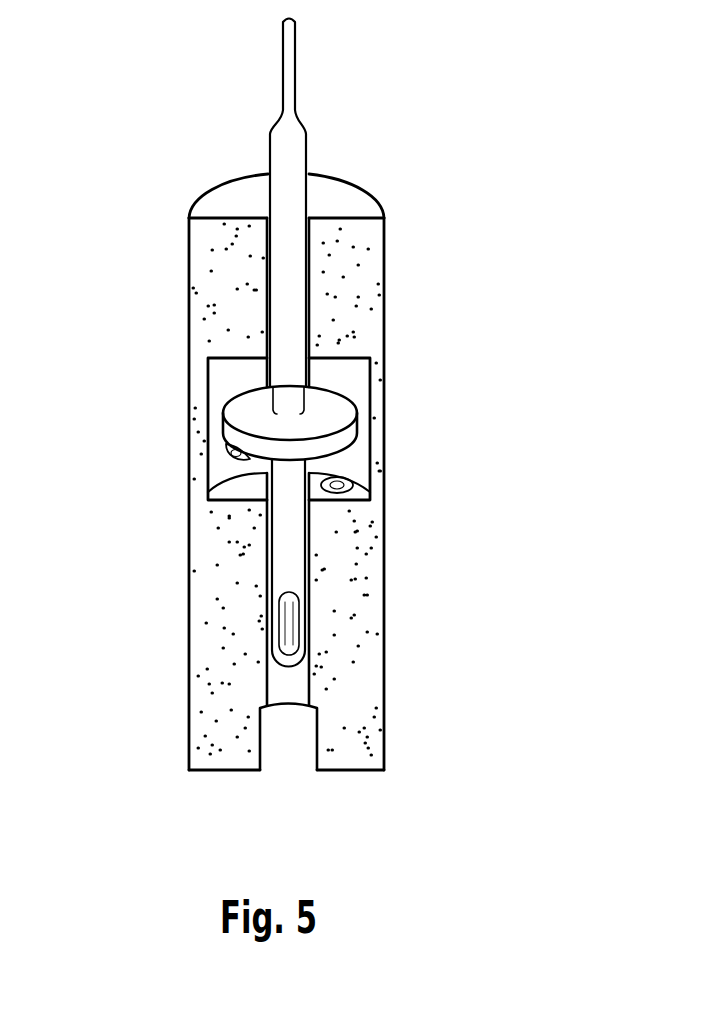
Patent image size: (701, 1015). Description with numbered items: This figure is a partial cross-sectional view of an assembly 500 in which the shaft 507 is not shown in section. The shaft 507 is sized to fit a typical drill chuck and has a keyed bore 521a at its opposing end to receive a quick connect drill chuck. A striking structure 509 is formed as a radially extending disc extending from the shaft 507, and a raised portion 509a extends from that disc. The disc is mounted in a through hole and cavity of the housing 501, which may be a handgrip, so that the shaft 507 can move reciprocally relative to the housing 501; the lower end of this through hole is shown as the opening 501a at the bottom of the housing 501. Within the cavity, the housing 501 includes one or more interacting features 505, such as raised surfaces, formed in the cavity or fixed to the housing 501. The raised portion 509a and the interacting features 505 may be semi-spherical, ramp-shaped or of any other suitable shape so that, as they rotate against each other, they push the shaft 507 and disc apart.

The assembly 500 is at (392, 134).
The housing 501 is at (372, 317).
The housing outlet opening 501a is at (307, 745).
The interacting features 505 is at (348, 480).
The shaft 507 is at (288, 78).
The striking structure 509 is at (247, 417).
The raised portion 509a is at (250, 458).
The keyed bore 521a is at (289, 648).